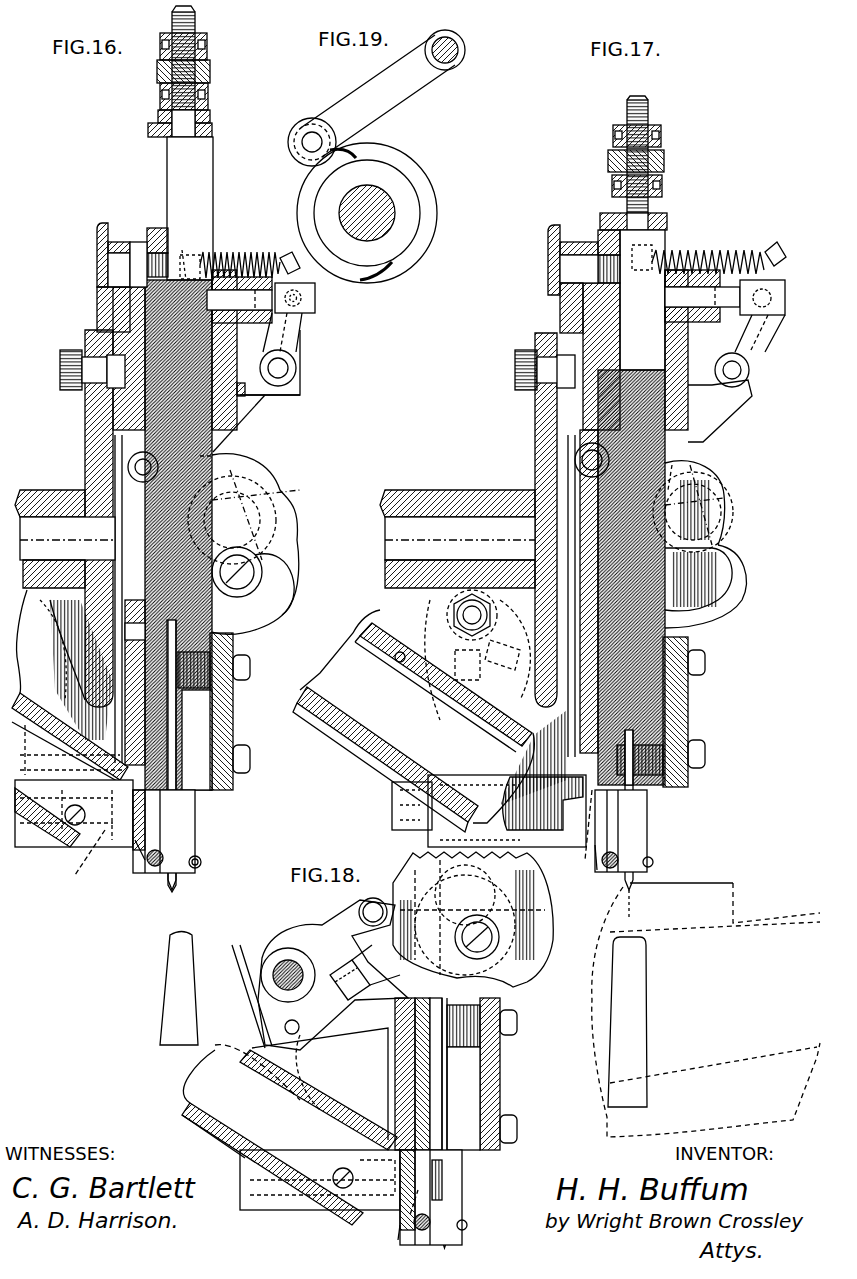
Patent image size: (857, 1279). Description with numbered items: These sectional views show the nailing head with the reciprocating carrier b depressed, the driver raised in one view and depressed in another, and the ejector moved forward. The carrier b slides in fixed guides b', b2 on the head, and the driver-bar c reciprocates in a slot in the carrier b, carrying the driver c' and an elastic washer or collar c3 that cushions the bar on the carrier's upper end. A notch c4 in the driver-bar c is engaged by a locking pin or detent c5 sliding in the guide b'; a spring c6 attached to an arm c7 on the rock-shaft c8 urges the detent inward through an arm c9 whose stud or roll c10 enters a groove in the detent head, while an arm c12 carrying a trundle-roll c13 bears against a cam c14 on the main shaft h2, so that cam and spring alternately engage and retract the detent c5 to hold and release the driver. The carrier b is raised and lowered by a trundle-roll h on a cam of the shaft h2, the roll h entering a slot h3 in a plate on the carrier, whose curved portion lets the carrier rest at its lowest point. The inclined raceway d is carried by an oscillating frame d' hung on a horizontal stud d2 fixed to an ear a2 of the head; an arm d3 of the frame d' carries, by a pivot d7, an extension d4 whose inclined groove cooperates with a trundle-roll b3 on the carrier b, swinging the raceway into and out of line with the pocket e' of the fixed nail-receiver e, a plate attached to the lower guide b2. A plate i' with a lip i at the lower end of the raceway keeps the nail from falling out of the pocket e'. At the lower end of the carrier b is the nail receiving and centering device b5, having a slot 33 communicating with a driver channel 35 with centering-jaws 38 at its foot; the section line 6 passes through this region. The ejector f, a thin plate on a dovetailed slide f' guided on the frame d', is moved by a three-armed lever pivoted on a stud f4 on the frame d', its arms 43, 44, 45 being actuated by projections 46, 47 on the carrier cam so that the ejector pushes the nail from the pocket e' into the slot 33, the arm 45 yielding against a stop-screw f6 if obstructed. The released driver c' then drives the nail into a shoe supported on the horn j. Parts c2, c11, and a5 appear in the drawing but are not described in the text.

In FIG. 16, the driver-bar c is at (200, 463).
In FIG. 17, the driver-bar c is at (644, 506).
In FIG. 16, the driver c' is at (150, 758).
In FIG. 17, the driver c' is at (651, 824).
In FIG. 18, the driver c' is at (457, 1123).
In FIG. 16, the adjusting nut c2 is at (250, 415).
In FIG. 17, the adjusting nut c2 is at (648, 200).
In FIG. 16, the washer or collar c3 is at (148, 137).
In FIG. 17, the washer or collar c3 is at (667, 222).
In FIG. 16, the notch or recess c4 is at (180, 254).
In FIG. 17, the notch or recess c4 is at (640, 375).
In FIG. 16, the locking pin or detent c5 is at (240, 300).
In FIG. 17, the locking pin or detent c5 is at (722, 300).
In FIG. 16, the spring c6 is at (250, 262).
In FIG. 17, the spring c6 is at (718, 262).
In FIG. 16, the arm c7 is at (292, 255).
In FIG. 17, the arm c7 is at (777, 246).
In FIG. 16, the rock-shaft c8 is at (280, 368).
In FIG. 19, the rock-shaft c8 is at (455, 35).
In FIG. 17, the rock-shaft c8 is at (735, 370).
In FIG. 16, the arm c9 is at (300, 332).
In FIG. 17, the arm c9 is at (762, 352).
In FIG. 16, the stud or roll c10 is at (315, 298).
In FIG. 17, the slide block c11 is at (770, 298).
In FIG. 19, the arm c12 is at (400, 86).
In FIG. 17, the arm c12 is at (705, 405).
In FIG. 16, the trundle-roll c13 is at (130, 466).
In FIG. 19, the trundle-roll c13 is at (298, 128).
In FIG. 17, the trundle-roll c13 is at (580, 458).
In FIG. 19, the cam c14 is at (312, 188).
In FIG. 17, the cam c14 is at (672, 465).
In FIG. 16, the vertically-reciprocating carrier b is at (137, 474).
In FIG. 17, the vertically-reciprocating carrier b is at (588, 475).
In FIG. 18, the vertically-reciprocating carrier b is at (407, 1074).
In FIG. 16, the fixed guide b' is at (283, 374).
In FIG. 16, the fixed guide b2 is at (233, 712).
In FIG. 17, the fixed guide b2 is at (688, 705).
In FIG. 18, the fixed guide b2 is at (500, 1070).
In FIG. 16, the trundle-roll b3 is at (102, 225).
In FIG. 17, the trundle-roll b3 is at (548, 256).
In FIG. 16, the nail receiving and centering device b5 is at (195, 835).
In FIG. 17, the nail receiving and centering device b5 is at (647, 835).
In FIG. 18, the nail receiving and centering device b5 is at (462, 1205).
In FIG. 16, the inclined chute or raceway d is at (68, 733).
In FIG. 17, the inclined chute or raceway d is at (413, 721).
In FIG. 18, the inclined chute or raceway d is at (291, 1137).
In FIG. 17, the oscillating frame d' is at (441, 669).
In FIG. 18, the oscillating frame d' is at (318, 1089).
In FIG. 16, the horizontal stud d2 is at (67, 552).
In FIG. 17, the horizontal stud d2 is at (460, 552).
In FIG. 16, the upwardly-projecting arm d3 is at (85, 430).
In FIG. 17, the upwardly-projecting arm d3 is at (535, 415).
In FIG. 16, the extension d4 is at (100, 305).
In FIG. 17, the extension d4 is at (560, 305).
In FIG. 16, the pivot d7 is at (60, 370).
In FIG. 17, the pivot d7 is at (515, 370).
In FIG. 16, the arm or ear a2 is at (42, 490).
In FIG. 17, the arm or ear a2 is at (432, 490).
In FIG. 16, the frame web a5 is at (85, 700).
In FIG. 17, the frame web a5 is at (520, 700).
In FIG. 16, the trundle-roll h is at (252, 568).
In FIG. 16, the positively-rotated shaft h2 is at (262, 490).
In FIG. 19, the positively-rotated shaft h2 is at (370, 200).
In FIG. 17, the positively-rotated shaft h2 is at (705, 490).
In FIG. 16, the slot h3 is at (275, 580).
In FIG. 17, the slot h3 is at (725, 585).
In FIG. 16, the lip or flange i is at (166, 793).
In FIG. 16, the plate i' is at (167, 772).
In FIG. 16, the fixed nail-receiver e is at (122, 892).
In FIG. 17, the fixed nail-receiver e is at (589, 880).
In FIG. 18, the fixed nail-receiver e is at (380, 1234).
In FIG. 17, the slot or pocket e' is at (584, 816).
In FIG. 16, the reciprocating ejector f is at (82, 862).
In FIG. 17, the reciprocating ejector f is at (574, 839).
In FIG. 18, the reciprocating ejector f is at (399, 1220).
In FIG. 18, the dovetailed slide f' is at (257, 996).
In FIG. 18, the stud f4 is at (285, 972).
In FIG. 18, the stop-screw f6 is at (345, 978).
In FIG. 17, the horn j is at (630, 975).
In FIG. 16, the section line 6 is at (176, 812).
In FIG. 16, the vertical slot 33 is at (156, 866).
In FIG. 17, the vertical slot 33 is at (614, 812).
In FIG. 18, the vertical slot 33 is at (430, 1215).
In FIG. 18, the vertical channel or way 35 is at (448, 1178).
In FIG. 16, the centering-jaws 38 is at (174, 890).
In FIG. 18, the lever arm 43 is at (225, 1082).
In FIG. 18, the lever arm 44 is at (388, 976).
In FIG. 18, the lever arm 45 is at (361, 915).
In FIG. 18, the cam projection 46 is at (369, 950).
In FIG. 18, the cam projection 47 is at (530, 965).